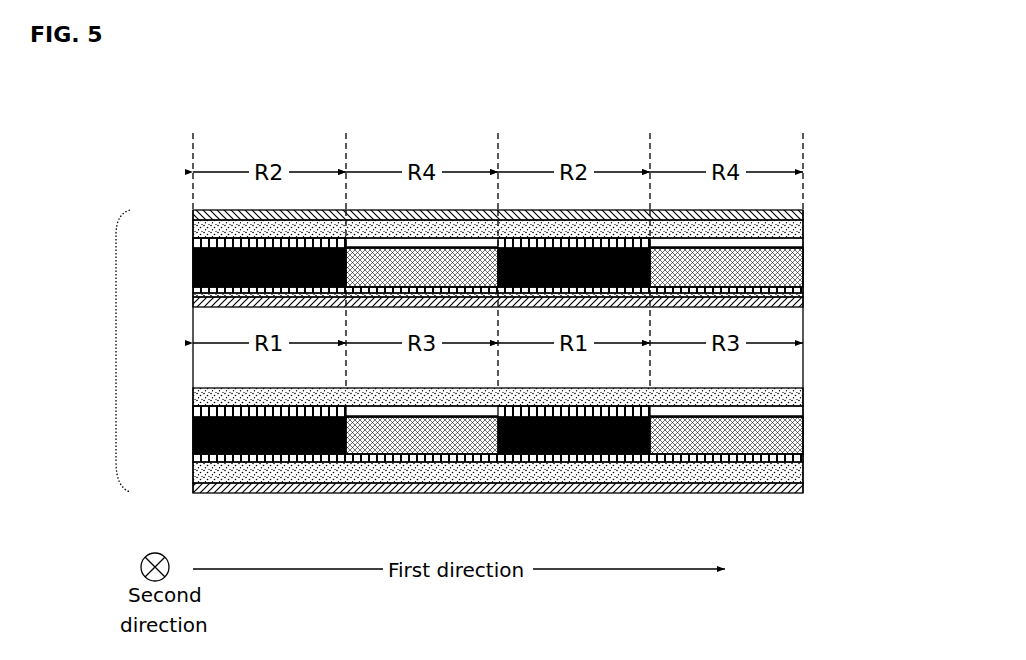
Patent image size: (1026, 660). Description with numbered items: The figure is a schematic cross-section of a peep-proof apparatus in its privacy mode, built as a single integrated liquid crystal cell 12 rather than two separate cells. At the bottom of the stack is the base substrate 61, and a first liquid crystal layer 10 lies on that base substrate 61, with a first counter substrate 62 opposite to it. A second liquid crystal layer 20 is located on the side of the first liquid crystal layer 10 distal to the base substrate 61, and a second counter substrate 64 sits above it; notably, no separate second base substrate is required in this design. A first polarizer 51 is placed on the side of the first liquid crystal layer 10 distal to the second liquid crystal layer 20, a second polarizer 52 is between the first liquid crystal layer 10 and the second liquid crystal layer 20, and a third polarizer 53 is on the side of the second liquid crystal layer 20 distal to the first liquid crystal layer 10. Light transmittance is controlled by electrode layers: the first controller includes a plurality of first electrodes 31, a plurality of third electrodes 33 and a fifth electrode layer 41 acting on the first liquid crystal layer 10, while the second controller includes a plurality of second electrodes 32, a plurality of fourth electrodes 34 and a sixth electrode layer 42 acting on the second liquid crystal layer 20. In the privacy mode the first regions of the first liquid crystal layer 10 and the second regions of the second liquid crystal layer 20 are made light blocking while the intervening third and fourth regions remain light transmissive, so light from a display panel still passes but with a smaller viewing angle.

The integrated liquid crystal cell 12 is at (116, 350).
The first liquid crystal layer 10 is at (803, 435).
The second liquid crystal layer 20 is at (803, 267).
The first electrodes 31 is at (268, 413).
The second electrodes 32 is at (268, 243).
The third electrodes 33 is at (421, 410).
The fourth electrodes 34 is at (422, 243).
The fifth electrode layer 41 is at (803, 458).
The sixth electrode layer 42 is at (803, 291).
The first polarizer 51 is at (803, 490).
The second polarizer 52 is at (803, 305).
The third polarizer 53 is at (803, 213).
The base substrate 61 is at (803, 473).
The first counter substrate 62 is at (803, 398).
The second counter substrate 64 is at (803, 228).